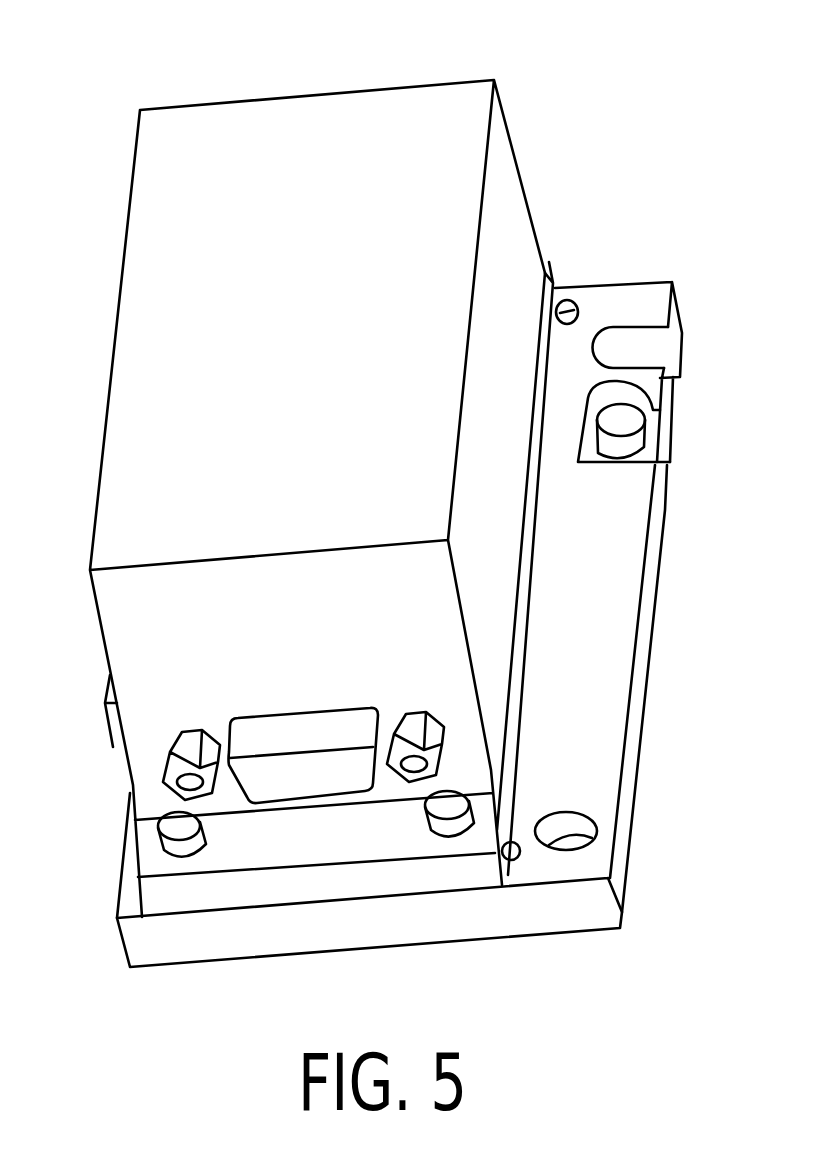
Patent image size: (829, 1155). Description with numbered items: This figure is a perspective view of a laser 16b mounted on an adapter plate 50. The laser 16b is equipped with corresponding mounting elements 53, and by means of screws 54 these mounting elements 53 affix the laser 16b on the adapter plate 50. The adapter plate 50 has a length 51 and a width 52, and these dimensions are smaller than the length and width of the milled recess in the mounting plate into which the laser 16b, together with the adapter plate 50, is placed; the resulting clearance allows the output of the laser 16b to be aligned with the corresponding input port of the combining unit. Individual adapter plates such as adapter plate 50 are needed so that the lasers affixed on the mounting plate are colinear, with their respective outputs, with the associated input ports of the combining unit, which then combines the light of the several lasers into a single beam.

The laser 16b is at (466, 100).
The adapter plate 50 is at (427, 610).
The length of adapter plate 51 is at (532, 913).
The width of adapter plate 52 is at (642, 667).
The mounting elements 53 is at (541, 263).
The screws 54 is at (167, 853).